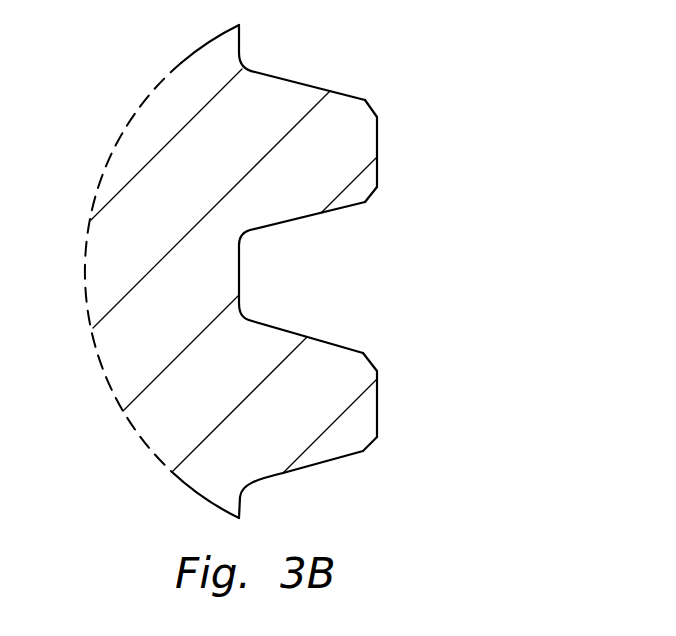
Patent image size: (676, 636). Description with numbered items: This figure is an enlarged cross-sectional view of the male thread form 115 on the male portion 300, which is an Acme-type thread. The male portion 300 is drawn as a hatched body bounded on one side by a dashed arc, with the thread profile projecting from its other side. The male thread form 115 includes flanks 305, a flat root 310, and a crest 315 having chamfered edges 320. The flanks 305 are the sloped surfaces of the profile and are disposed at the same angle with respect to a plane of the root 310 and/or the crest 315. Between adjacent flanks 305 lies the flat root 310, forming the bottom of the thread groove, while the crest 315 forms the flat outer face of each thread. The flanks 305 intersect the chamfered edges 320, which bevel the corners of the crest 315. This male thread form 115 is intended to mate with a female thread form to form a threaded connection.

The male thread form 115 is at (502, 92).
The male portion 300 is at (102, 264).
The flanks 305 is at (312, 86).
The flat root 310 is at (240, 278).
The crest 315 is at (378, 145).
The chamfered edges 320 is at (370, 110).